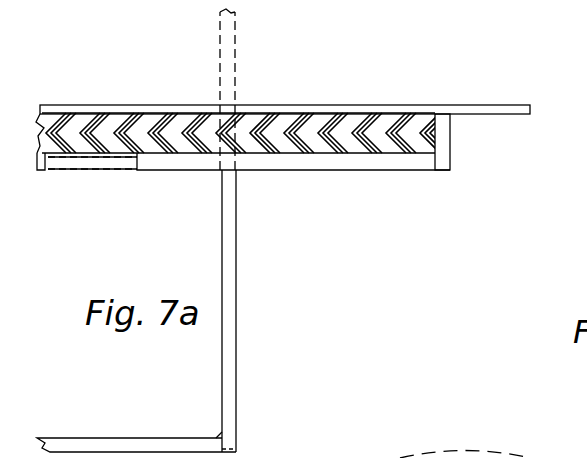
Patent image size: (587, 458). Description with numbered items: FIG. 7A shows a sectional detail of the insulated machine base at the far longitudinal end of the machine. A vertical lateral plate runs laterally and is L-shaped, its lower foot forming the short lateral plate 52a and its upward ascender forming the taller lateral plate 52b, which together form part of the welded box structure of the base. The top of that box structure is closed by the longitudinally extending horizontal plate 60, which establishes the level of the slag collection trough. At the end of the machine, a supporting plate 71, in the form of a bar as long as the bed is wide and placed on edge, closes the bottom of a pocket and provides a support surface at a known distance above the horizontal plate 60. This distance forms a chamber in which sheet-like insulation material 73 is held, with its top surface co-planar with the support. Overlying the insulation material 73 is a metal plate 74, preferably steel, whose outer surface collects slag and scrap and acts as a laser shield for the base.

The short lateral plate 52a is at (228, 266).
The taller lateral plate 52b is at (229, 73).
The horizontal plate 60 is at (280, 162).
The supporting plate 71 is at (443, 132).
The insulation material 73 is at (384, 143).
The metal plate 74 is at (327, 108).